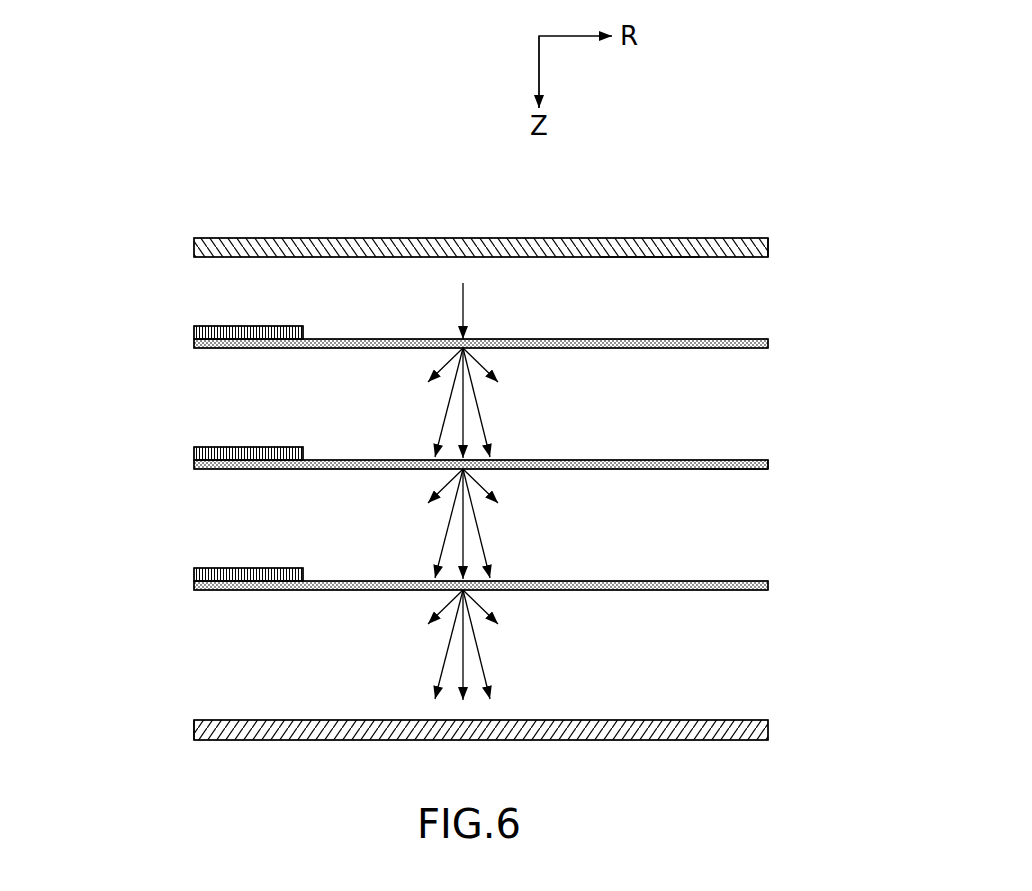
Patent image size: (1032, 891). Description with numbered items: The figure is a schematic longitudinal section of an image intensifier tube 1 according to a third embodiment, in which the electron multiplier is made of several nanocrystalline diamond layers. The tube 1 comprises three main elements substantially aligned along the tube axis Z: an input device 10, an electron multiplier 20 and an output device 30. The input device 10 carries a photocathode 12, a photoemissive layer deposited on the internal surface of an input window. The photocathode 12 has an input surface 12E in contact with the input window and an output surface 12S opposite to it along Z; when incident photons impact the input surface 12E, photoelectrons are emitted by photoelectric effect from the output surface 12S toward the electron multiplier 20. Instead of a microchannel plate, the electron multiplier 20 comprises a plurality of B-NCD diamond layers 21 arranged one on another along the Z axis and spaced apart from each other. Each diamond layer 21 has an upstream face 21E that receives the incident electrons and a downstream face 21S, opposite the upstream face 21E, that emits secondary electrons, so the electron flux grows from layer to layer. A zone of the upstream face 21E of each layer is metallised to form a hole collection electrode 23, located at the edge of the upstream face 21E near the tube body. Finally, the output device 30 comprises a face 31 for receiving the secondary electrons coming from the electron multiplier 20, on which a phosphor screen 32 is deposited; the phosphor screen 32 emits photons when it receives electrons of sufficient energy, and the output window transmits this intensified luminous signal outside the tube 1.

The tube 1 is at (350, 155).
The input device 10 is at (180, 252).
The photocathode 12 is at (769, 250).
The input surface 12E is at (735, 238).
The output surface 12S is at (642, 258).
The electron multiplier 20 is at (130, 460).
The B-NCD diamond layer 21 is at (770, 344).
The upstream face 21E is at (732, 461).
The downstream face 21S is at (740, 470).
The collection electrode 23 is at (194, 330).
The output device 30 is at (130, 712).
The face for receiving secondary electrons 31 is at (770, 720).
The phosphor screen 32 is at (194, 733).